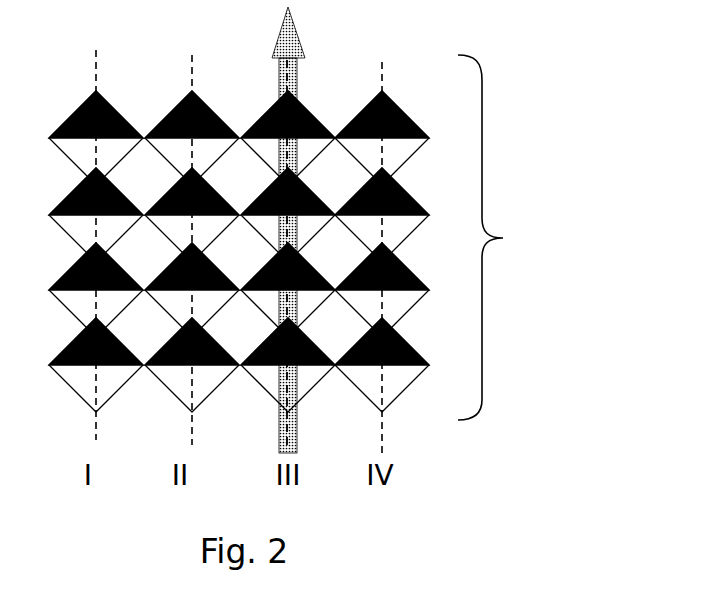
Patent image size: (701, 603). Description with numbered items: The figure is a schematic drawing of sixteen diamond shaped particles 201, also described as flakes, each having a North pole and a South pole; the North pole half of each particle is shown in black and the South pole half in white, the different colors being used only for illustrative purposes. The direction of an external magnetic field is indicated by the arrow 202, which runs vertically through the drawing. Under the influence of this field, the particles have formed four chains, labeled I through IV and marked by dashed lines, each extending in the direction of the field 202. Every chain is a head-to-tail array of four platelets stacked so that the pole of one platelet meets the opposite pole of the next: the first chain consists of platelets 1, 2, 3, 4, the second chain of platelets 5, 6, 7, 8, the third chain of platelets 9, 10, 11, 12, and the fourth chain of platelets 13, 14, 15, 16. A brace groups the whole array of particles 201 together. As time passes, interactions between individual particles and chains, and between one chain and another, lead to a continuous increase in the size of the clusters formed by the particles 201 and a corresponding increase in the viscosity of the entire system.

The platelet 1 is at (96, 138).
The platelet 2 is at (96, 215).
The platelet 3 is at (96, 290).
The platelet 4 is at (96, 365).
The platelet 5 is at (192, 138).
The platelet 6 is at (192, 215).
The platelet 7 is at (192, 290).
The platelet 8 is at (192, 365).
The platelet 9 is at (288, 138).
The platelet 10 is at (288, 215).
The platelet 11 is at (288, 290).
The platelet 12 is at (288, 365).
The platelet 13 is at (382, 138).
The platelet 14 is at (382, 215).
The platelet 15 is at (382, 290).
The platelet 16 is at (382, 365).
The diamond shaped particles 201 is at (532, 237).
The arrow indicating external magnetic field direction 202 is at (287, 44).